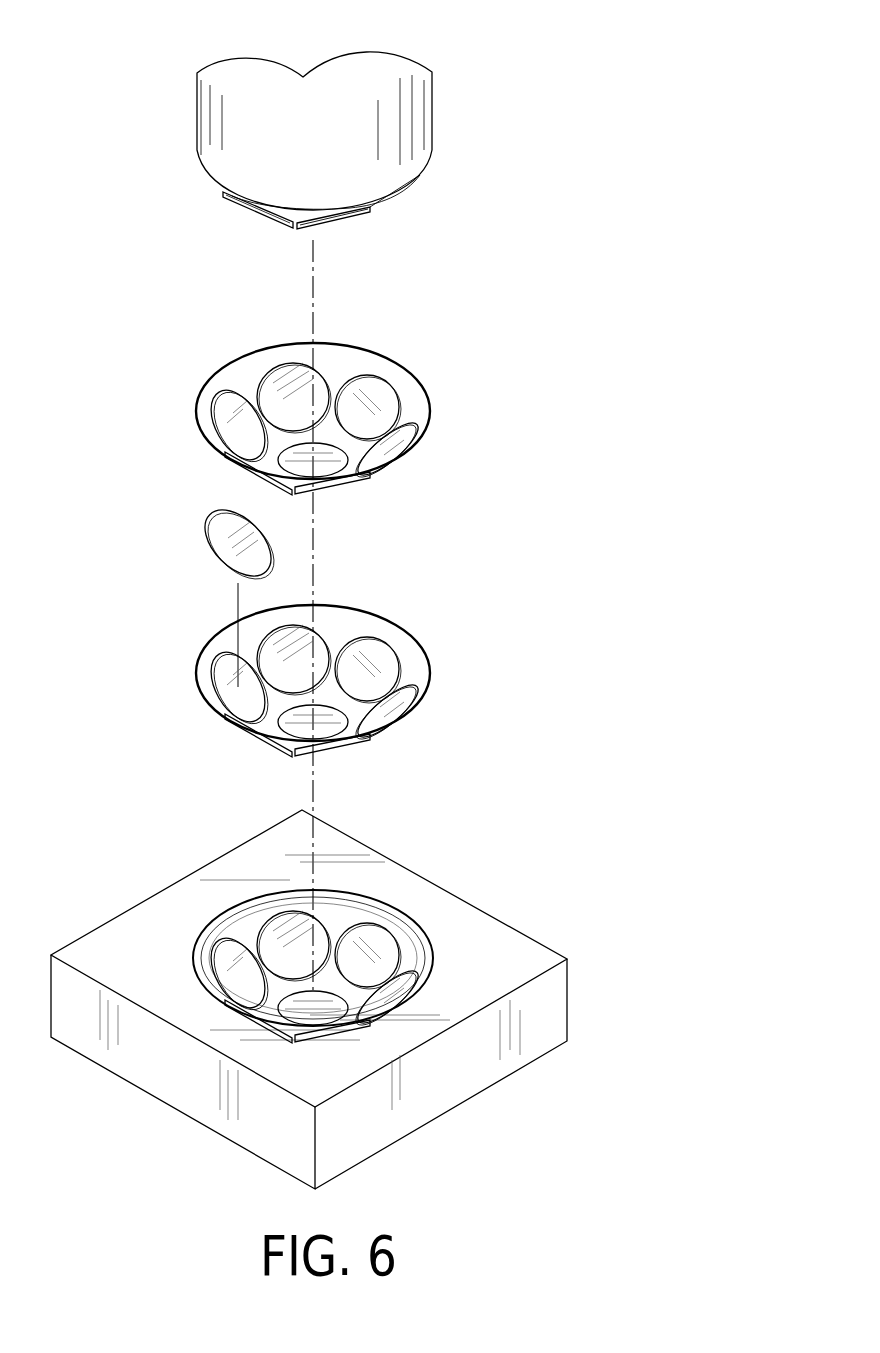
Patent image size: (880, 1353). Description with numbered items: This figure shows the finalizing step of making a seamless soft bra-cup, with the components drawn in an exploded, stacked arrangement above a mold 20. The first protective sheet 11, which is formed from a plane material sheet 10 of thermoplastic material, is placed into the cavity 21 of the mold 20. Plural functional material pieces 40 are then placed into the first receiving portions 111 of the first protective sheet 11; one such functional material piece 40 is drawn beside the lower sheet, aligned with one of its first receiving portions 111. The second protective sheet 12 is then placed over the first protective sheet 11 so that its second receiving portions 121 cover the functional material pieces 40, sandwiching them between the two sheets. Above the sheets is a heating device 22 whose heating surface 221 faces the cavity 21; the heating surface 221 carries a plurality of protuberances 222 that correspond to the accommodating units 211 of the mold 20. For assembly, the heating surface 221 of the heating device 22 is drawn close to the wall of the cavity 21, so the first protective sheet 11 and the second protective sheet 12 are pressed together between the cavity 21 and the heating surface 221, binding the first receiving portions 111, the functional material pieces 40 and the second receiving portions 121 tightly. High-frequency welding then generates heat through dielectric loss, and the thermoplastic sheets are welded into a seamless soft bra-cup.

The plane material sheet 10 is at (307, 506).
The first protective sheet 11 is at (227, 640).
The first receiving portion 111 is at (227, 677).
The second protective sheet 12 is at (417, 397).
The second receiving portion 121 is at (413, 435).
The mold 20 is at (309, 985).
The cavity 21 is at (236, 926).
The accommodating unit 211 is at (226, 962).
The heating device 22 is at (422, 110).
The heating surface 221 is at (273, 217).
The protuberance 222 is at (347, 218).
The functional material piece 40 is at (203, 532).